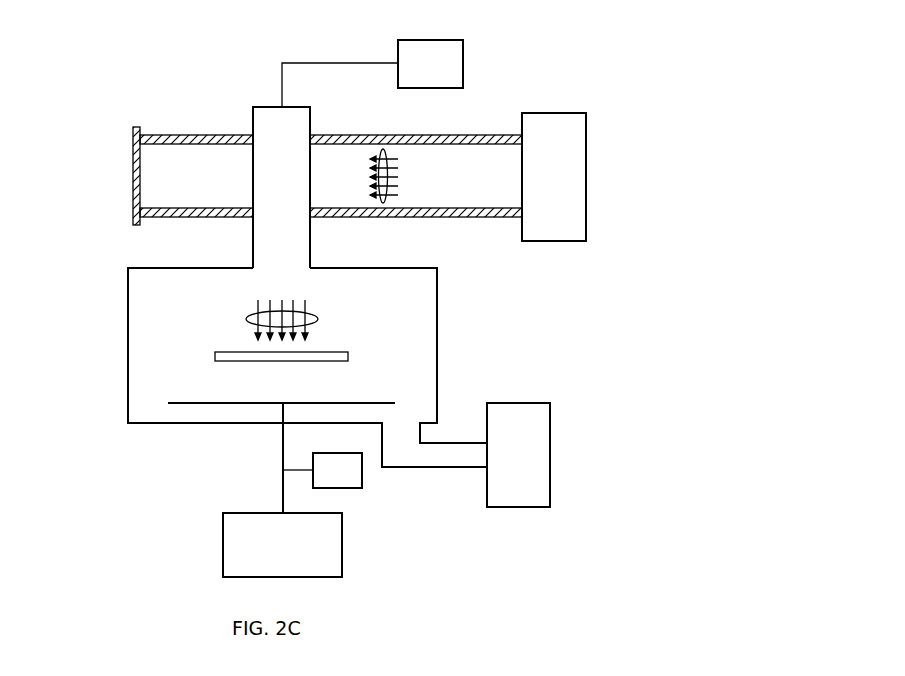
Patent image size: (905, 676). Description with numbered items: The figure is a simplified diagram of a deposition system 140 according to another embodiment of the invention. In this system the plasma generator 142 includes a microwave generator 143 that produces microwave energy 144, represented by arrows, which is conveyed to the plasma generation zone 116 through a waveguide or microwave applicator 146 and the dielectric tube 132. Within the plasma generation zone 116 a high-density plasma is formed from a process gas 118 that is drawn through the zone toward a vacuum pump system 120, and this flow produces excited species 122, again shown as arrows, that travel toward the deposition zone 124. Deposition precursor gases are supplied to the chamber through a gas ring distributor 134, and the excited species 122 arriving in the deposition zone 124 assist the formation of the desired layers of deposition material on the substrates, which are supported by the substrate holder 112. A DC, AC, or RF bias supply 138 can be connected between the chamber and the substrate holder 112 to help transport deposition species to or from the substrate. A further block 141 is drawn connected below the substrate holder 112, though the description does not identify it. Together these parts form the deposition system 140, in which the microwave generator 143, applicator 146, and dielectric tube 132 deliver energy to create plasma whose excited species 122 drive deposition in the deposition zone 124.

The deposition system 140 is at (120, 101).
The process gas 118 is at (464, 64).
The plasma generation zone 116 is at (301, 190).
The dielectric tube 132 is at (310, 128).
The microwave applicator 146 is at (473, 135).
The plasma generator 142 is at (355, 225).
The microwave energy 144 is at (383, 149).
The microwave generator 143 is at (587, 177).
The substrate holder 112 is at (370, 403).
The excited species 122 is at (318, 319).
The gas ring distributor 134 is at (337, 352).
The deposition zone 124 is at (299, 394).
The vacuum pump system 120 is at (551, 455).
The bias supply 138 is at (352, 488).
The controller 141 is at (223, 547).